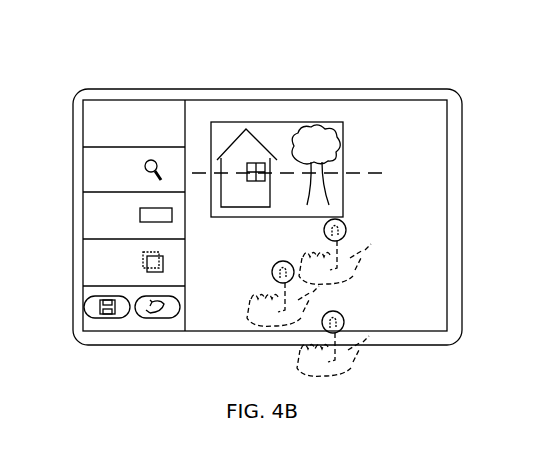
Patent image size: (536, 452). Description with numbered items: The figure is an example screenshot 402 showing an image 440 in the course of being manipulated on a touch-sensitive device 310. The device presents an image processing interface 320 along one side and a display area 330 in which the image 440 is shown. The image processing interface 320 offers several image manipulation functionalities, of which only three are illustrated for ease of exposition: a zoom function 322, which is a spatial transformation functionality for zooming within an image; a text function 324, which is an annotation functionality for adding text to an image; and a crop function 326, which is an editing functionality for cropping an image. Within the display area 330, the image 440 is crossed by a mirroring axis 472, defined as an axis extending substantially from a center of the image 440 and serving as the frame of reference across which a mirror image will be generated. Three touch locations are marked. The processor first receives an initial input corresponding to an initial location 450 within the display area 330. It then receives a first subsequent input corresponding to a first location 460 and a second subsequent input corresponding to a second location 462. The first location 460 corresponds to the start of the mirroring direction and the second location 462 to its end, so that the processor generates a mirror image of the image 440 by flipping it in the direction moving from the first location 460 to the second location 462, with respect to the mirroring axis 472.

The touch-sensitive device 310 is at (152, 89).
The image processing interface 320 is at (107, 195).
The zoom function 322 is at (88, 172).
The text function 324 is at (88, 216).
The crop function 326 is at (88, 260).
The display area 330 is at (432, 123).
The screenshot 402 is at (393, 58).
The image 440 is at (235, 122).
The initial location 450 is at (273, 277).
The first location 460 is at (346, 228).
The second location 462 is at (346, 321).
The mirroring axis 472 is at (377, 173).